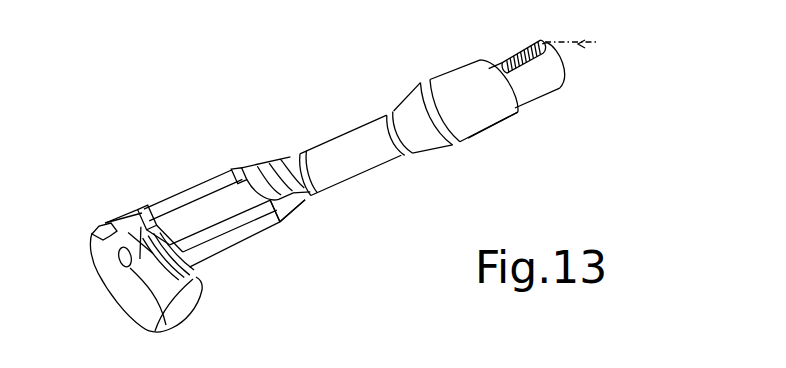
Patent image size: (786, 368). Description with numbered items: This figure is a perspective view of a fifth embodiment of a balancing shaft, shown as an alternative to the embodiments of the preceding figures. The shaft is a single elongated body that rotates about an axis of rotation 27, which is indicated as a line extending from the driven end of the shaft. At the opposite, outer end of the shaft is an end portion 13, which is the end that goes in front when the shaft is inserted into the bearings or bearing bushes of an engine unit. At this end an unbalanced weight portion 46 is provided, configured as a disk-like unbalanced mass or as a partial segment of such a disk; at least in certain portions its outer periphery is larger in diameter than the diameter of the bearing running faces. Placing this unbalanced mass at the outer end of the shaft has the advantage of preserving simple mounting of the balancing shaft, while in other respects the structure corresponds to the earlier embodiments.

The end portion 13 is at (90, 268).
The axis of rotation 27 is at (598, 42).
The unbalanced weight portion 46 is at (123, 280).